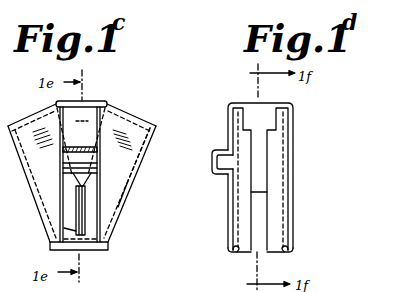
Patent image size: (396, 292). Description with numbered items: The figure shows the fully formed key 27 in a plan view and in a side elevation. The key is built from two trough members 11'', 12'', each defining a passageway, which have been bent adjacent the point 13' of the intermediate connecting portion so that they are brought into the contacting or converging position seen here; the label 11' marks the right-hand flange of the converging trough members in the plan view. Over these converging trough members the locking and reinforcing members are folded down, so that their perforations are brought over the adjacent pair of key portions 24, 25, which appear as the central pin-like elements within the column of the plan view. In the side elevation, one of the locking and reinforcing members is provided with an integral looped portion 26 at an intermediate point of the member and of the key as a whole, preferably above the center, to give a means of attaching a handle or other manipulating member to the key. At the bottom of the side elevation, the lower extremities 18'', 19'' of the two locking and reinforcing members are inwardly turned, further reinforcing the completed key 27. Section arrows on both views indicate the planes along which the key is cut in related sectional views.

In FIG. 1C, the point of intermediate connecting portion 13' is at (83, 119).
In FIG. 1C, the right wing flange 11' is at (148, 173).
In FIG. 1C, the trough member 11'' is at (31, 173).
In FIG. 1C, the trough member 12'' is at (149, 161).
In FIG. 1C, the key 27 is at (126, 207).
In FIG. 1C, the key portion 25 is at (86, 229).
In FIG. 1C, the key portion 24 is at (76, 230).
In FIG. 1D, the integral looped portion 26 is at (215, 174).
In FIG. 1D, the lower extremity of locking and reinforcing member 18'' is at (223, 258).
In FIG. 1D, the lower extremity of locking and reinforcing member 19'' is at (295, 254).